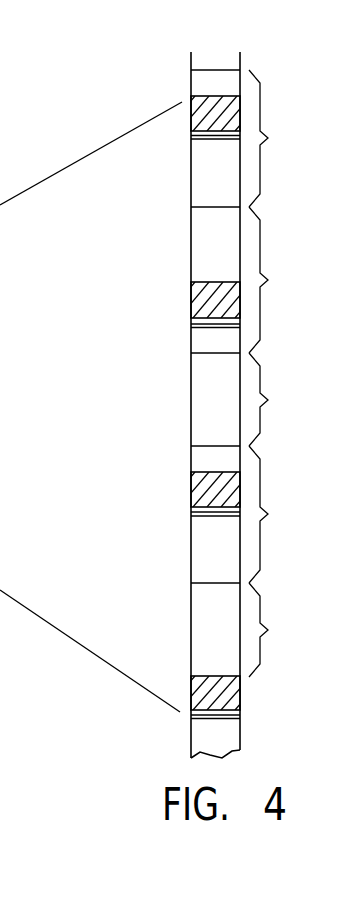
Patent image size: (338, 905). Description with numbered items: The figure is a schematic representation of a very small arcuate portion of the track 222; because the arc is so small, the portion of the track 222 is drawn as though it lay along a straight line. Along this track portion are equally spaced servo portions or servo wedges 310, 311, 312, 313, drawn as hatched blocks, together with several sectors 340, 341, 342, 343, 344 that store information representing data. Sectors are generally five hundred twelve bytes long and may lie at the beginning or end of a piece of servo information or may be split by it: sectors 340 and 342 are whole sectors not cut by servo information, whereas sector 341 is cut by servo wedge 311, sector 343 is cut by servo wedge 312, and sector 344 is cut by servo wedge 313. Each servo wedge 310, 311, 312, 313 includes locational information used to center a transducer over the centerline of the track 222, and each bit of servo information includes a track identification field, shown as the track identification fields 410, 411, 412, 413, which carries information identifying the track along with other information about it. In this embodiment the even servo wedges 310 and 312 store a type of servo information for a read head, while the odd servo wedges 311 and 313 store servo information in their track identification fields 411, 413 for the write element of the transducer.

The track 222 is at (213, 69).
The servo wedge 313 is at (191, 118).
The track identification field 413 is at (215, 141).
The servo wedge 312 is at (191, 304).
The track identification field 412 is at (217, 329).
The servo wedge 311 is at (191, 493).
The track identification field 411 is at (214, 518).
The servo wedge 310 is at (243, 695).
The track identification field 410 is at (218, 720).
The sector 344 is at (268, 138).
The sector 343 is at (268, 280).
The sector 342 is at (268, 400).
The sector 341 is at (268, 514).
The sector 340 is at (268, 630).